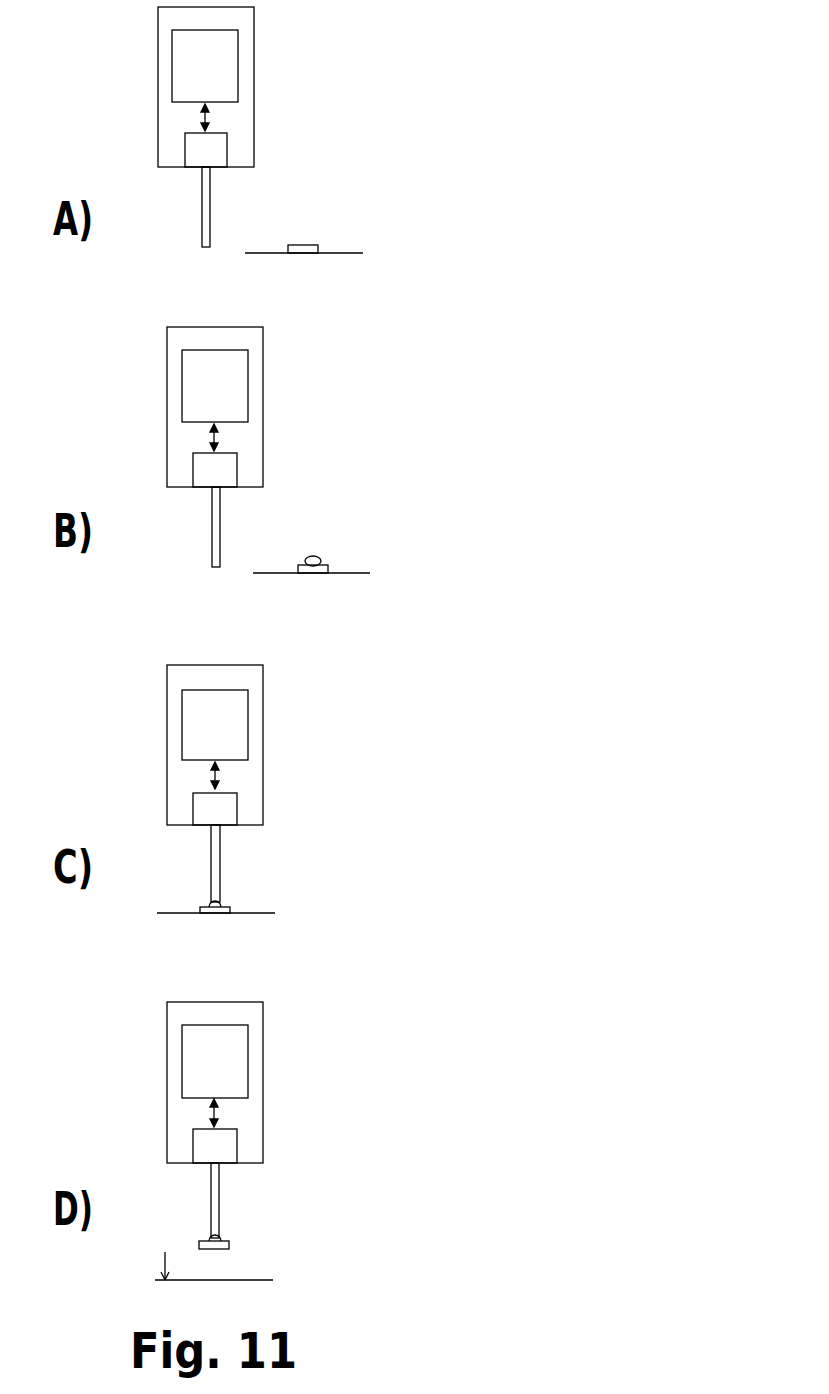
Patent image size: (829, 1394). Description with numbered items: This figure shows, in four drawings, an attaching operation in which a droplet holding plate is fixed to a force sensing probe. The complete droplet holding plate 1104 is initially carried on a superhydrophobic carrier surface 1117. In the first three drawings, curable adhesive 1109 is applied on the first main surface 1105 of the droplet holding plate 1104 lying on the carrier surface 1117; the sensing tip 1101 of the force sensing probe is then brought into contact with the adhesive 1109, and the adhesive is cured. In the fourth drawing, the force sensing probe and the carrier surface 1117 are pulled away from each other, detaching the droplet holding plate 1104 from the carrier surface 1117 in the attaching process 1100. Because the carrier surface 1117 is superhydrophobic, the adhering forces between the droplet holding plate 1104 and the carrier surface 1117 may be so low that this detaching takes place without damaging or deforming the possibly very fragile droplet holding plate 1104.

The dispensing system 1100 is at (348, 1122).
The dispensing needle 1101 is at (204, 248).
The droplet holding plate 1104 is at (332, 218).
The first main surface 1105 is at (323, 563).
The curable adhesive 1109 is at (310, 557).
The superhydrophobic carrier surface 1117 is at (352, 253).